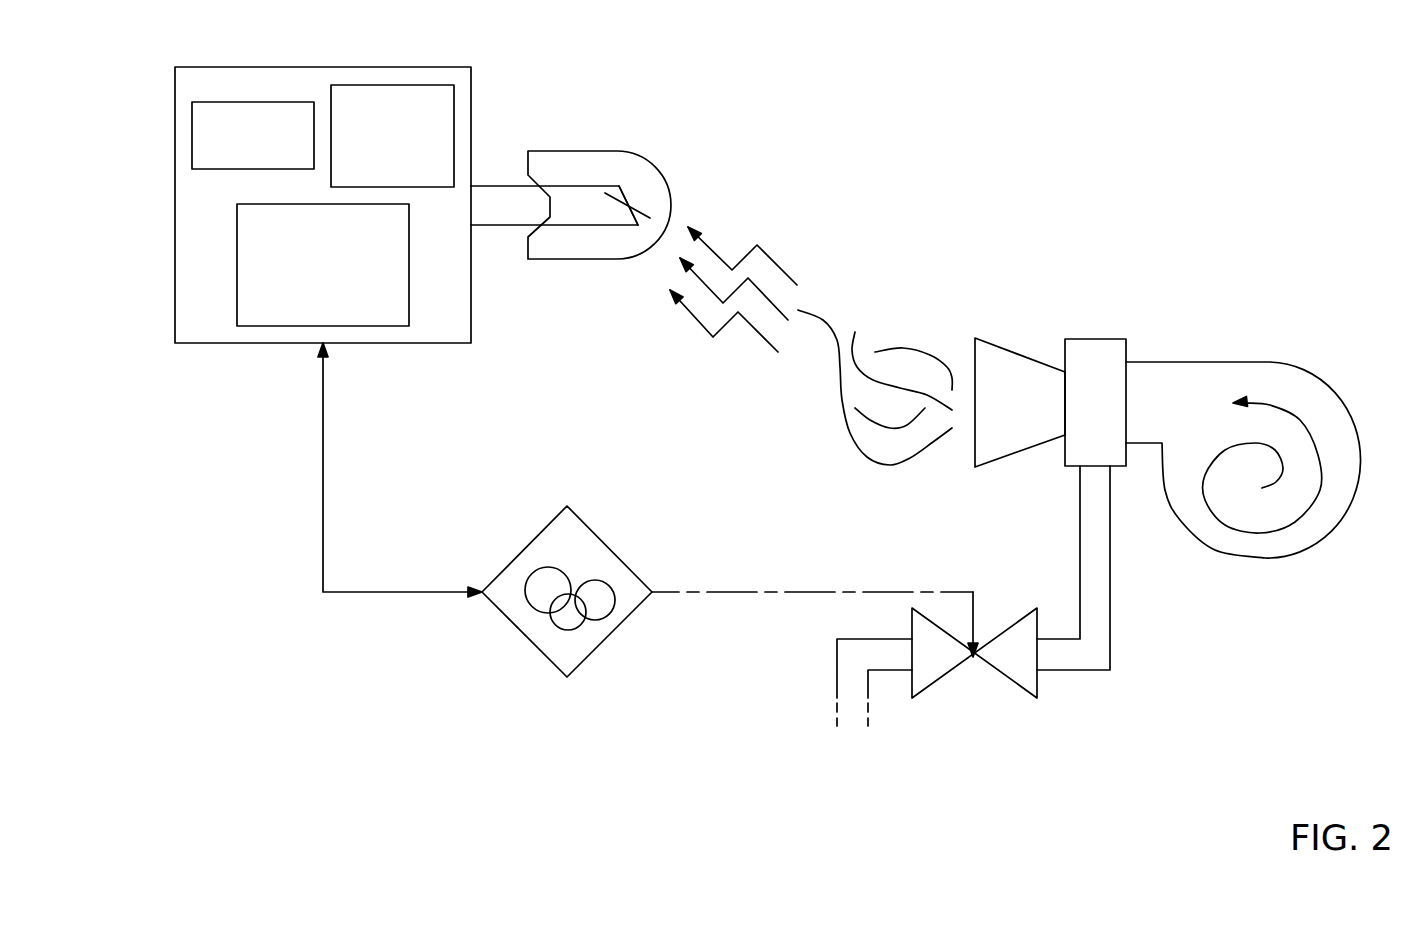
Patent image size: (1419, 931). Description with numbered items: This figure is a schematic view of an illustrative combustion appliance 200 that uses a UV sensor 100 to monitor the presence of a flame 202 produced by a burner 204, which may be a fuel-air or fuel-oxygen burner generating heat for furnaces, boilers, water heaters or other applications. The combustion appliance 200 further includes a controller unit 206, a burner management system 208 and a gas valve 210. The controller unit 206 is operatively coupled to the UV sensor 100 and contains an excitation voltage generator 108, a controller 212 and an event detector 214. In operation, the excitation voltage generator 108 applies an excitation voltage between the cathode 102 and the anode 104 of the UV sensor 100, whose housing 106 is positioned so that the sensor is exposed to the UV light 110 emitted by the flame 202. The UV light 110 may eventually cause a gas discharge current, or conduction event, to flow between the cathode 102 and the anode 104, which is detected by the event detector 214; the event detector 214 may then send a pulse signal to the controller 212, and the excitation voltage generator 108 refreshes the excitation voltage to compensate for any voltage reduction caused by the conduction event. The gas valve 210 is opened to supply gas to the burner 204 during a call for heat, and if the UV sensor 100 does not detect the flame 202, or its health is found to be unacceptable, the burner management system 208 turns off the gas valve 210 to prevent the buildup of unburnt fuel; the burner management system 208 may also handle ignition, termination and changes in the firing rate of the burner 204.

The UV sensor 100 is at (627, 190).
The cathode 102 is at (635, 200).
The anode 104 is at (615, 213).
The housing 106 is at (573, 151).
The excitation voltage generator 108 is at (423, 85).
The UV light 110 is at (780, 265).
The combustion appliance 200 is at (921, 466).
The flame 202 is at (893, 338).
The burner 204 is at (1144, 308).
The controller unit 206 is at (337, 67).
The burner management system 208 is at (612, 547).
The gas valve 210 is at (1005, 682).
The controller 212 is at (192, 134).
The event detector 214 is at (237, 264).